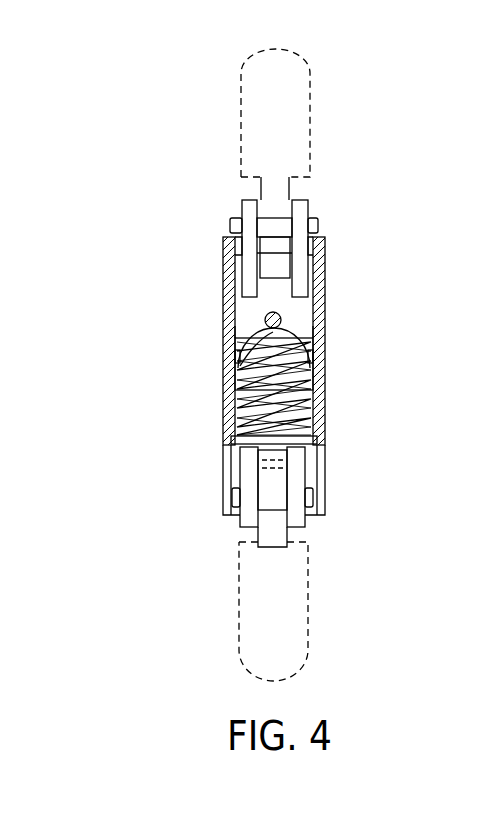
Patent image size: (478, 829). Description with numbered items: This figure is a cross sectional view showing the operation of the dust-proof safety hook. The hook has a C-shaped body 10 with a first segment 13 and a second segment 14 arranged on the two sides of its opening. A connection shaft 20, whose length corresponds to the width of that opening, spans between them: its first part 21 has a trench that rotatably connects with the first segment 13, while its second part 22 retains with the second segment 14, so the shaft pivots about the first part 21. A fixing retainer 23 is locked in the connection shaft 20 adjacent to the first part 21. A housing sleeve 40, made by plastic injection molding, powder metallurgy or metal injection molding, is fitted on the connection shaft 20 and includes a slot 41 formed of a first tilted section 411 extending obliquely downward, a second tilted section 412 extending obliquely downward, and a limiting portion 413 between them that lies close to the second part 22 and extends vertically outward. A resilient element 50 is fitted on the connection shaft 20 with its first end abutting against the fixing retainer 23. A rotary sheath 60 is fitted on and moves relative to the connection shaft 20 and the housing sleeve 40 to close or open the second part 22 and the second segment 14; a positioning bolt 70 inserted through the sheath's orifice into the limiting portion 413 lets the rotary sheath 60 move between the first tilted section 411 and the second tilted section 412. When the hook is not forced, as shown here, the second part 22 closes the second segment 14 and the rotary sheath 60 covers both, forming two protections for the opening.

The body 10 is at (311, 107).
The first segment 13 is at (270, 478).
The second segment 14 is at (275, 232).
The connection shaft 20 is at (301, 466).
The first part 21 is at (313, 497).
The second part 22 is at (230, 225).
The fixing retainer 23 is at (318, 437).
The housing sleeve 40 is at (235, 315).
The slot 41 is at (235, 300).
The first tilted section 411 is at (237, 353).
The second tilted section 412 is at (311, 360).
The limiting portion 413 is at (306, 338).
The resilient element 50 is at (250, 418).
The rotary sheath 60 is at (228, 331).
The positioning bolt 70 is at (281, 318).